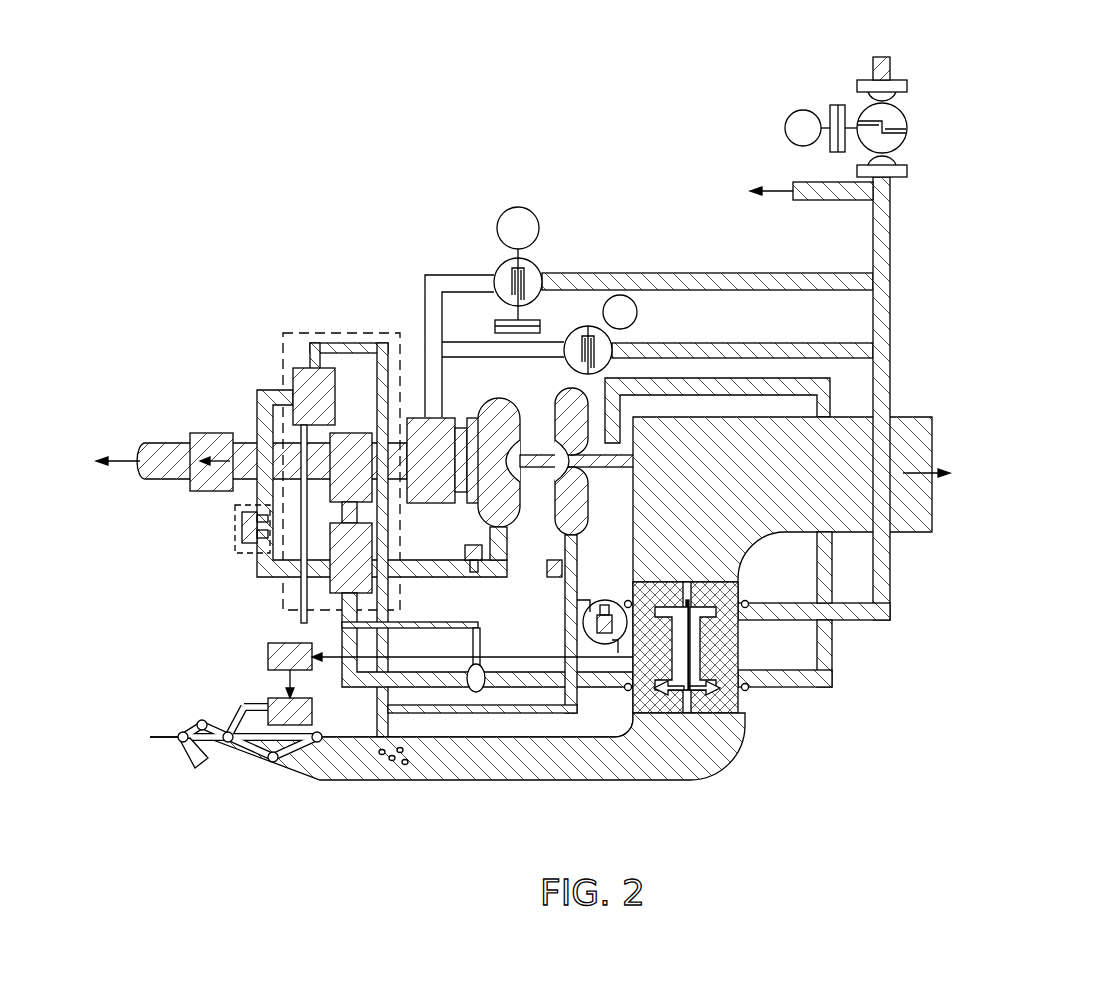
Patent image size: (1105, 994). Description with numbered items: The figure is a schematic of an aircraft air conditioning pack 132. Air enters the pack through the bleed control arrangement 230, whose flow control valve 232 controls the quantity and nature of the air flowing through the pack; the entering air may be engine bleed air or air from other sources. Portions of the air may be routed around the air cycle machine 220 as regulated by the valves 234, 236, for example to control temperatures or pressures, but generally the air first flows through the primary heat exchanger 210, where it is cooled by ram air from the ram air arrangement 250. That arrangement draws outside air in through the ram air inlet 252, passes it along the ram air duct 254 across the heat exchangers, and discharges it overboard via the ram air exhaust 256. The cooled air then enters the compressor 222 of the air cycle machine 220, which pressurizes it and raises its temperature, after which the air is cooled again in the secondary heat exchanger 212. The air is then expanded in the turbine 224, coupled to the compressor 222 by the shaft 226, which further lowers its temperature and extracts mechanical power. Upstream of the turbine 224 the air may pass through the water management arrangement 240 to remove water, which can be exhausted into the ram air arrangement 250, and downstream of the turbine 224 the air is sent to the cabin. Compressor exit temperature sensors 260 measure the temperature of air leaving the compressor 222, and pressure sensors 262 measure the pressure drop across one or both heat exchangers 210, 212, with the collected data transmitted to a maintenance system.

The air conditioning pack 132 is at (542, 465).
The primary heat exchanger 210 is at (740, 660).
The secondary heat exchanger 212 is at (631, 665).
The air cycle machine 220 is at (620, 493).
The compressor 222 is at (567, 391).
The turbine 224 is at (490, 400).
The shaft 226 is at (545, 440).
The bleed control arrangement 230 is at (880, 427).
The flow control valve 232 is at (908, 128).
The valve 234 is at (518, 207).
The valve 236 is at (638, 312).
The water management arrangement 240 is at (404, 529).
The ram air arrangement 250 is at (447, 758).
The ram air inlet 252 is at (313, 778).
The ram air duct 254 is at (537, 785).
The ram air exhaust 256 is at (934, 440).
The compressor exit temperature sensor 260 is at (581, 620).
The pressure sensor 262 is at (626, 602).